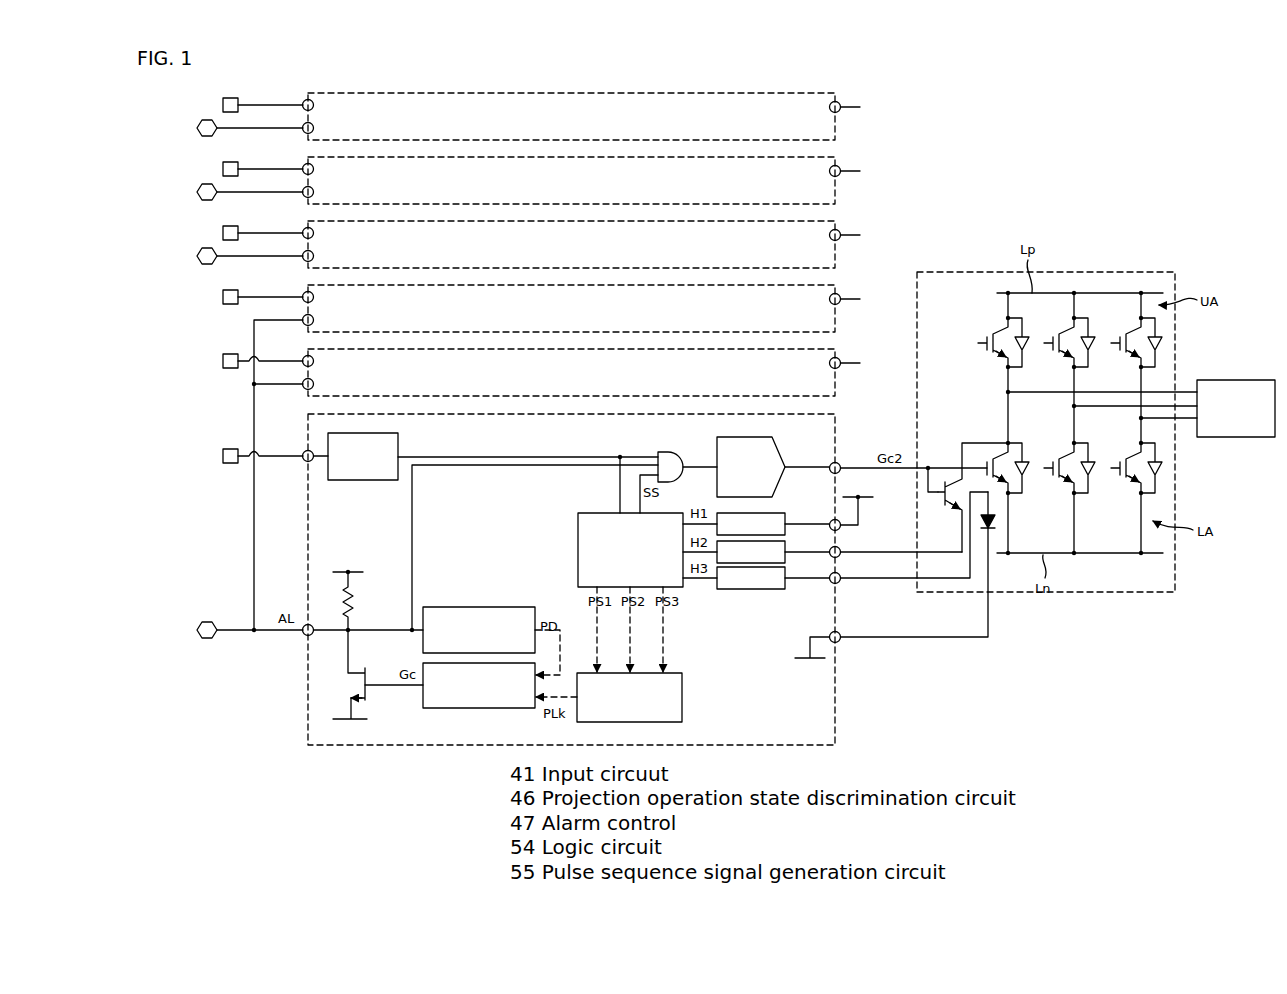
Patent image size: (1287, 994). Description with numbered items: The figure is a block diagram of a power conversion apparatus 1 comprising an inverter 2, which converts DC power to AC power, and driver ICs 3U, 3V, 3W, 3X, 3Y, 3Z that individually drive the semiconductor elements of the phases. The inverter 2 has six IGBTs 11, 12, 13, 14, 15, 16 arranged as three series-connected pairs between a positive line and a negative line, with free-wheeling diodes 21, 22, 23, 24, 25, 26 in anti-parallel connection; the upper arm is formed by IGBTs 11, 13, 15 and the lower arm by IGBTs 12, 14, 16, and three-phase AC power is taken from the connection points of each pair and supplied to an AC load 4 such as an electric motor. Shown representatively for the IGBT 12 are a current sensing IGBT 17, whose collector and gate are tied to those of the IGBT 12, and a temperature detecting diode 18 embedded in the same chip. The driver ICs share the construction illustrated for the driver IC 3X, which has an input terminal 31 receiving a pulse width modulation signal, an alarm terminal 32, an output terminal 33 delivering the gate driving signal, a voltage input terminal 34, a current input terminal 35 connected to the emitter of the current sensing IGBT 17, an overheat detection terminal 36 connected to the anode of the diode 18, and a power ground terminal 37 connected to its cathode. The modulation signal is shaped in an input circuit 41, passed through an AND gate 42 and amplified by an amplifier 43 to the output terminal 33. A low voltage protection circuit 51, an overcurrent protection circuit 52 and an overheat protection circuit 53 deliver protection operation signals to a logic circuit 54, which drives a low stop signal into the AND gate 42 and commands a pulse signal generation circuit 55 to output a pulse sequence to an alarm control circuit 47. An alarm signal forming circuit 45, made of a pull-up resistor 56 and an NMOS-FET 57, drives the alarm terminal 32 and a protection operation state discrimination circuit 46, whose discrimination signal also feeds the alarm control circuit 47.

The power conversion apparatus 1 is at (1106, 188).
The inverter 2 is at (958, 272).
The AC load 4 is at (1242, 380).
The IGBT 11 is at (983, 335).
The IGBT 12 is at (983, 458).
The IGBT 13 is at (1049, 335).
The IGBT 14 is at (1049, 459).
The IGBT 15 is at (1116, 335).
The IGBT 16 is at (1116, 459).
The current sensing IGBT 17 is at (942, 510).
The temperature detecting diode 18 is at (997, 522).
The free-wheeling diode 21 is at (1028, 358).
The free-wheeling diode 22 is at (1028, 483).
The free-wheeling diode 23 is at (1094, 358).
The free-wheeling diode 24 is at (1094, 483).
The free-wheeling diode 25 is at (1161, 358).
The free-wheeling diode 26 is at (1161, 483).
The input terminal 31 is at (303, 102).
The alarm terminal 32 is at (303, 125).
The output terminal 33 is at (841, 102).
The voltage input terminal 34 is at (841, 531).
The current input terminal 35 is at (841, 558).
The overheat detection terminal 36 is at (841, 584).
The power ground terminal 37 is at (841, 643).
The input circuit 41 is at (400, 440).
The AND gate 42 is at (680, 455).
The amplifier 43 is at (776, 441).
The alarm signal forming circuit 45 is at (382, 696).
The protection operation state discrimination circuit 46 is at (500, 607).
The alarm control circuit 47 is at (498, 709).
The low voltage protection circuit 51 is at (787, 521).
The overcurrent protection circuit 52 is at (787, 549).
The overheat protection circuit 53 is at (787, 575).
The logic circuit 54 is at (590, 512).
The pulse signal generation circuit 55 is at (683, 692).
The pull-up resistor 56 is at (356, 597).
The NMOS-FET 57 is at (368, 670).
The driver IC 3W is at (837, 128).
The driver IC 3V is at (837, 192).
The driver IC 3U is at (837, 256).
The driver IC 3Z is at (837, 320).
The driver IC 3Y is at (837, 384).
The driver IC 3X is at (837, 432).